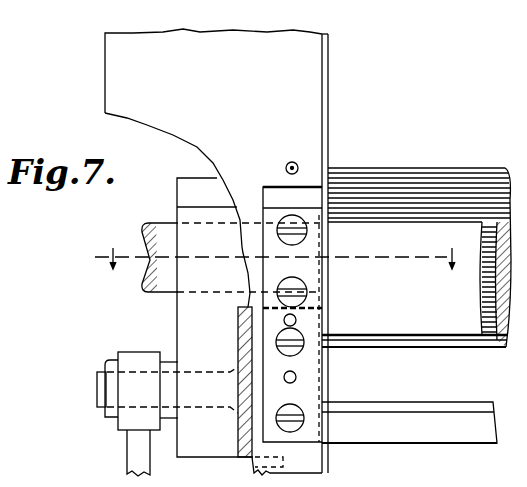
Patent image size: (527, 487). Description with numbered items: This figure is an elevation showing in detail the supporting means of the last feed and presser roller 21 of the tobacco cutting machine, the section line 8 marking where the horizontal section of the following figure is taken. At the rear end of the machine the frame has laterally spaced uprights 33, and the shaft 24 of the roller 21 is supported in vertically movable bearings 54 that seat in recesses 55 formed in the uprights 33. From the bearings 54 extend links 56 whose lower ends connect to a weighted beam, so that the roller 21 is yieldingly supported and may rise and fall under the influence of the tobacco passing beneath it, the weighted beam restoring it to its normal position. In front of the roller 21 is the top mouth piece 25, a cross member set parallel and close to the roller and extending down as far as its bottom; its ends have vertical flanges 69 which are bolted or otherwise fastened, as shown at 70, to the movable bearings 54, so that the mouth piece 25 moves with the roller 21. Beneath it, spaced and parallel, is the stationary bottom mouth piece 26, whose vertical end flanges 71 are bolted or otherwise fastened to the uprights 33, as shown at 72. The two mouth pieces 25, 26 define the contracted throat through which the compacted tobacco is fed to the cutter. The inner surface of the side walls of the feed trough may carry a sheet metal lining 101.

The uprights 33 is at (213, 252).
The sheet metal lining 101 is at (328, 105).
The feed and presser roller 21 is at (415, 173).
The recesses 55 is at (178, 197).
The bearings 54 is at (186, 320).
The shaft 24 is at (143, 283).
The section line 8- 8 is at (272, 259).
The vertical flanges 69 is at (304, 275).
The fastening bolts 70 is at (303, 237).
The vertical end flanges 71 is at (310, 376).
The fastening bolts 72 is at (298, 413).
The top mouth piece 25 is at (405, 278).
The bottom mouth piece 26 is at (438, 418).
The links 56 is at (134, 448).